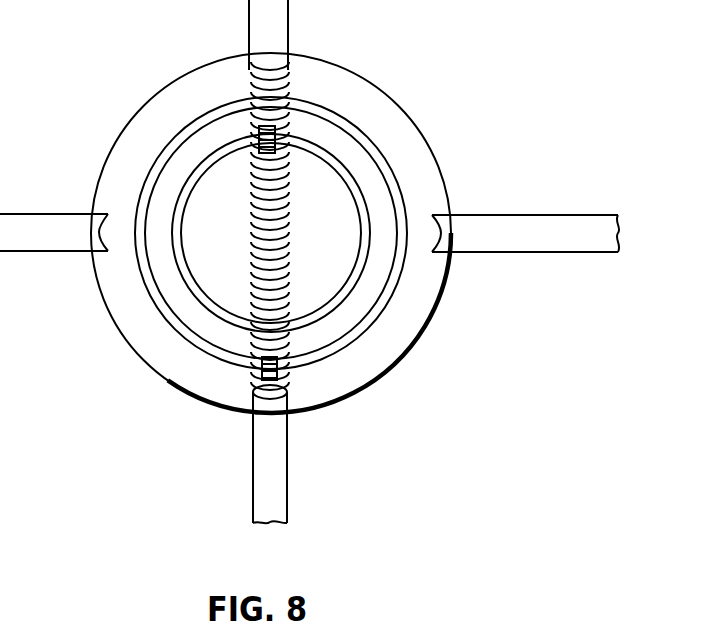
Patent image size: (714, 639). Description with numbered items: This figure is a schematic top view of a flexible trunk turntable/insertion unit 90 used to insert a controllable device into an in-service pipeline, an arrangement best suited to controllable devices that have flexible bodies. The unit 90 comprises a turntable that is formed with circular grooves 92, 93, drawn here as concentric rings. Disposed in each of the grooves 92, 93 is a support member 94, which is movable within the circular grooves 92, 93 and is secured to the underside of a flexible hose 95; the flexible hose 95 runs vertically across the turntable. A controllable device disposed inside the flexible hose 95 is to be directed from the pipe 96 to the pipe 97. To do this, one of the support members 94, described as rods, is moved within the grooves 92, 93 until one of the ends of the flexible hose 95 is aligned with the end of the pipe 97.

The flexible trunk turntable/insertion unit 90 is at (386, 97).
The circular groove 92 is at (400, 272).
The circular groove 93 is at (358, 283).
The support member 94 is at (282, 136).
The flexible hose 95 is at (254, 280).
The pipe 96 is at (288, 486).
The pipe 97 is at (560, 215).